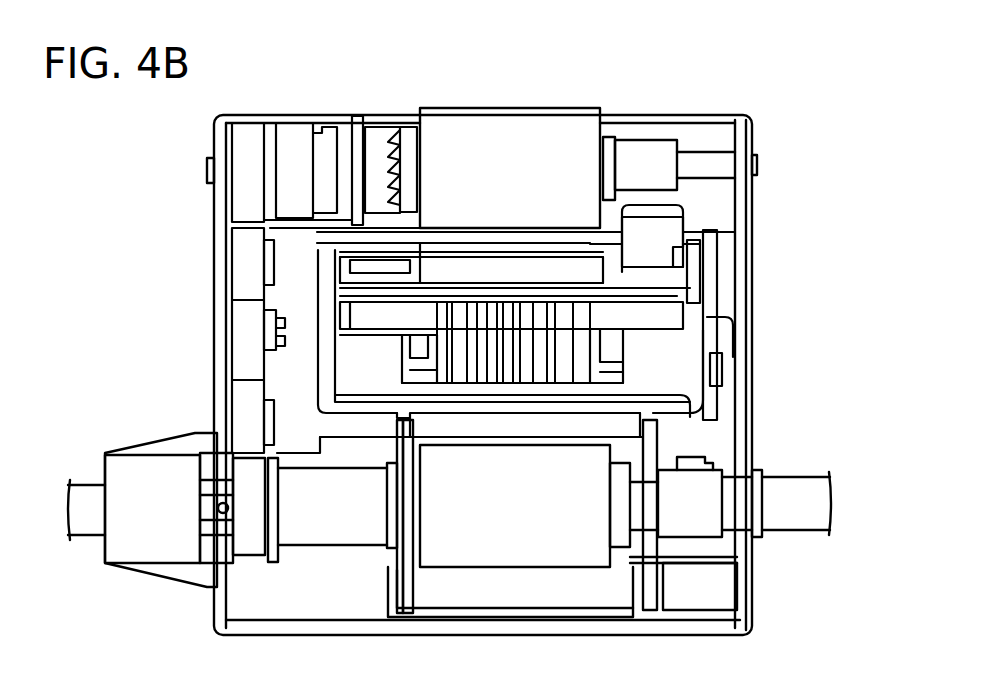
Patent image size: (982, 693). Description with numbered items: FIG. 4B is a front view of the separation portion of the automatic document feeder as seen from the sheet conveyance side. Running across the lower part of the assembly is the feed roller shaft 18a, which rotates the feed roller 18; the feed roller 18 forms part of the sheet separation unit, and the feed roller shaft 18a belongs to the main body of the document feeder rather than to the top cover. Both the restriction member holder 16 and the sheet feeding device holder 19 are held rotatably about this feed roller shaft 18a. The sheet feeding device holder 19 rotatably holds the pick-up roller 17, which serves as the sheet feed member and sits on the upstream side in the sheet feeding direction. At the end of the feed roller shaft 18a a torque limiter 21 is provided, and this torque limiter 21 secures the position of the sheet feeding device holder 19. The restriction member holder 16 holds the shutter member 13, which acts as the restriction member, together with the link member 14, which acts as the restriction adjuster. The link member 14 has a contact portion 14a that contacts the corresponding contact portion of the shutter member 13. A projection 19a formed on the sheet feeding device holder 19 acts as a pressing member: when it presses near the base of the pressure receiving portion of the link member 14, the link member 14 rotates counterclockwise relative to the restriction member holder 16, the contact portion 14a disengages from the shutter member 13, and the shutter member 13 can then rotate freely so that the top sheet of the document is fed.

The shutter member 13 is at (667, 312).
The link member 14 is at (663, 262).
The contact portion 14a is at (610, 363).
The restriction member holder 16 is at (670, 405).
The pick-up roller 17 is at (568, 115).
The feed roller 18 is at (537, 555).
The feed roller shaft 18a is at (775, 488).
The sheet feeding device holder 19 is at (745, 145).
The projection 19a is at (715, 228).
The torque limiter 21 is at (133, 545).